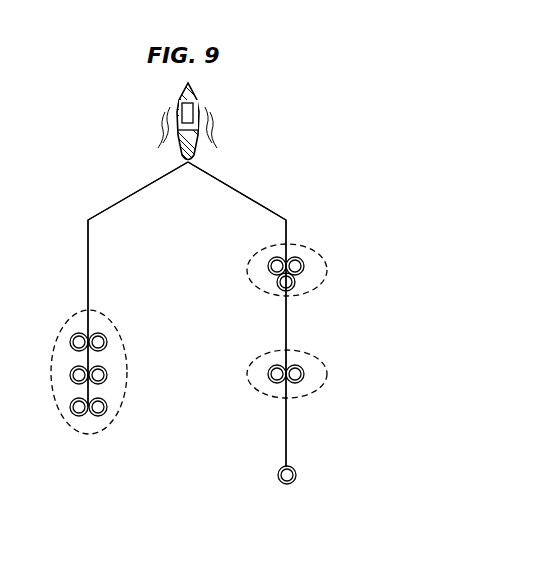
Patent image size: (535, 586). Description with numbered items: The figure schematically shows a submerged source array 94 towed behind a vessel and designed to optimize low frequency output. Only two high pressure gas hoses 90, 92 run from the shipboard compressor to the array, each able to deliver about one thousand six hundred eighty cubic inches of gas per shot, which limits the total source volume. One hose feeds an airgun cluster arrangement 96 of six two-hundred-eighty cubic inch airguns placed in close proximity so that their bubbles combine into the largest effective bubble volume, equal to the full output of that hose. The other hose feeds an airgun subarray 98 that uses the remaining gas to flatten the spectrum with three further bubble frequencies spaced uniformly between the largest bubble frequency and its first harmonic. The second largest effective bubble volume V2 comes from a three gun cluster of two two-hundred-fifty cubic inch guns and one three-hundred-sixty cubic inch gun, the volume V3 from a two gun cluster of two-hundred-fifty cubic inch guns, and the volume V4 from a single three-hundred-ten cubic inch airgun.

The gas hose 90 is at (253, 197).
The gas hose 92 is at (143, 185).
The submerged source array 94 is at (263, 159).
The airgun cluster arrangement 96 is at (67, 327).
The airgun subarray 98 is at (304, 381).
The second largest effective bubble volume V2 is at (258, 252).
The third effective bubble volume V3 is at (312, 353).
The fourth effective bubble volume V4 is at (273, 458).